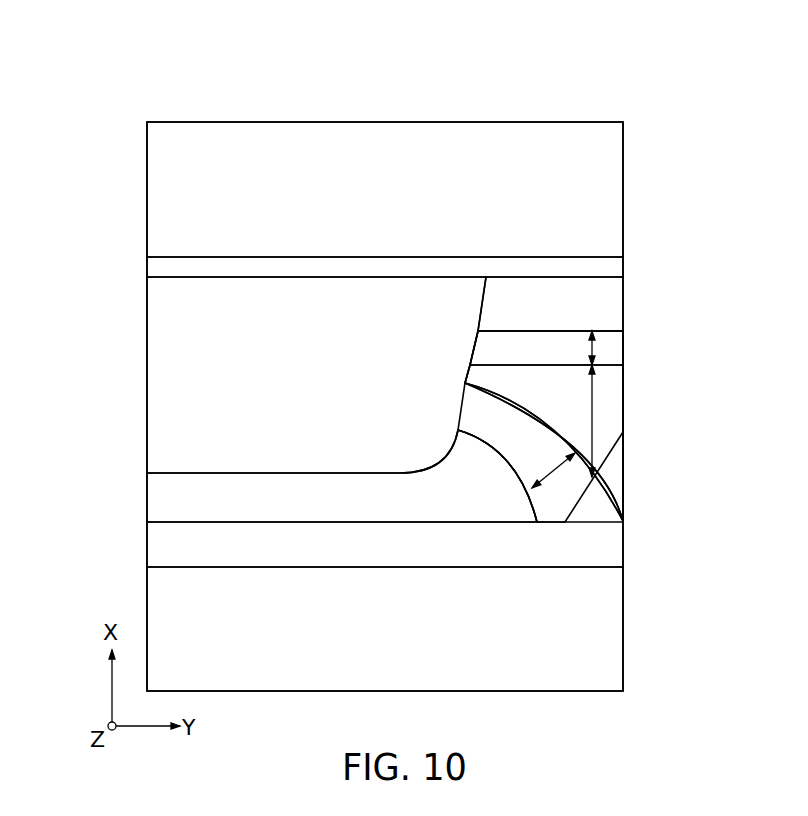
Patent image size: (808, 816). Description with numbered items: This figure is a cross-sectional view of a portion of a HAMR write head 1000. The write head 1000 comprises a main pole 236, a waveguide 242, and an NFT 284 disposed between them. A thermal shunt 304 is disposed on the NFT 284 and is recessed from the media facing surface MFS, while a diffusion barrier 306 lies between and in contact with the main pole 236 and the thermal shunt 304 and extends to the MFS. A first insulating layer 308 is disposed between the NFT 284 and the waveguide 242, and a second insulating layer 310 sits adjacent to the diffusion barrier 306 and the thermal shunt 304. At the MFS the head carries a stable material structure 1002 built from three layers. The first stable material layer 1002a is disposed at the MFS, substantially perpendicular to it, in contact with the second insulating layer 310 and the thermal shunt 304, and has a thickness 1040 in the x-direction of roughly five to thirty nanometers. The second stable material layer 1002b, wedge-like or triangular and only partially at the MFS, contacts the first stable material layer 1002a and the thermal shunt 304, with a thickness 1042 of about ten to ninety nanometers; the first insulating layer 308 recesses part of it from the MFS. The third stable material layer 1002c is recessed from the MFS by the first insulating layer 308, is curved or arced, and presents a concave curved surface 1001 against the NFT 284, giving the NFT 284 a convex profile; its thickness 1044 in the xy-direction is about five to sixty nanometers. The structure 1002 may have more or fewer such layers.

The HAMR write head 1000 is at (190, 83).
The main pole 236 is at (403, 232).
The diffusion barrier 306 is at (610, 268).
The thermal shunt 304 is at (285, 368).
The second insulating layer 310 is at (547, 318).
The stable material structure 1002 is at (670, 382).
The first stable material layer 1002a is at (497, 345).
The second stable material layer 1002b is at (492, 378).
The third stable material layer 1002c is at (488, 410).
The concave curved surface 1001 is at (505, 457).
The thickness of first stable material layer 1040 is at (590, 347).
The thickness of second stable material layer 1042 is at (593, 413).
The thickness of third stable material layer 1044 is at (553, 472).
The NFT 284 is at (318, 508).
The first insulating layer 308 is at (340, 558).
The waveguide 242 is at (365, 657).
The media facing surface MFS is at (657, 464).